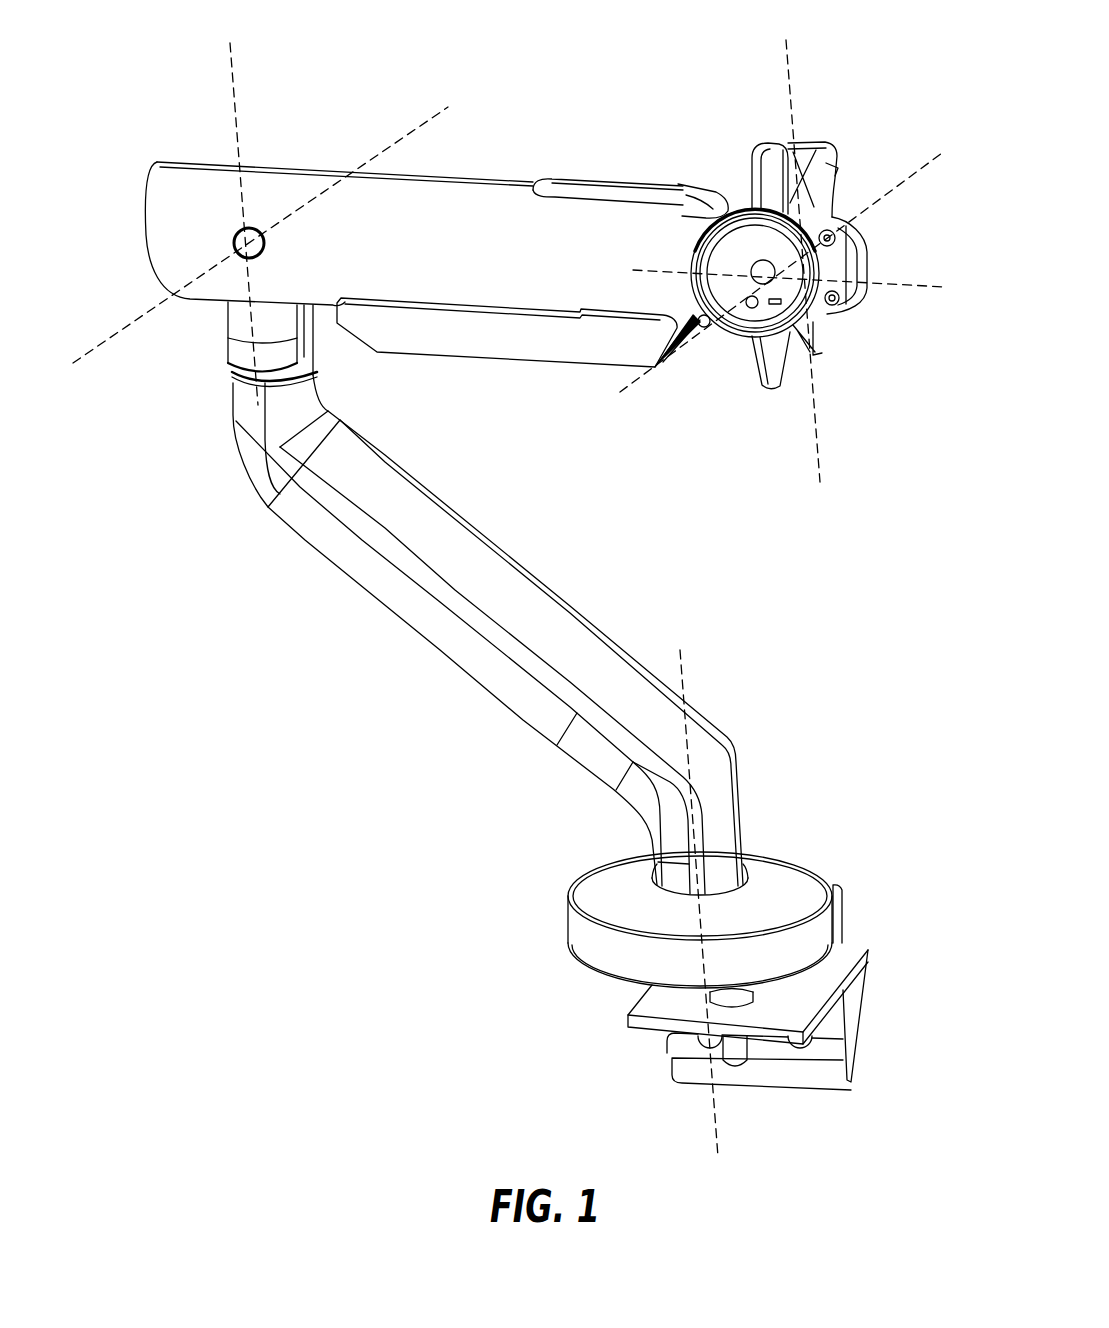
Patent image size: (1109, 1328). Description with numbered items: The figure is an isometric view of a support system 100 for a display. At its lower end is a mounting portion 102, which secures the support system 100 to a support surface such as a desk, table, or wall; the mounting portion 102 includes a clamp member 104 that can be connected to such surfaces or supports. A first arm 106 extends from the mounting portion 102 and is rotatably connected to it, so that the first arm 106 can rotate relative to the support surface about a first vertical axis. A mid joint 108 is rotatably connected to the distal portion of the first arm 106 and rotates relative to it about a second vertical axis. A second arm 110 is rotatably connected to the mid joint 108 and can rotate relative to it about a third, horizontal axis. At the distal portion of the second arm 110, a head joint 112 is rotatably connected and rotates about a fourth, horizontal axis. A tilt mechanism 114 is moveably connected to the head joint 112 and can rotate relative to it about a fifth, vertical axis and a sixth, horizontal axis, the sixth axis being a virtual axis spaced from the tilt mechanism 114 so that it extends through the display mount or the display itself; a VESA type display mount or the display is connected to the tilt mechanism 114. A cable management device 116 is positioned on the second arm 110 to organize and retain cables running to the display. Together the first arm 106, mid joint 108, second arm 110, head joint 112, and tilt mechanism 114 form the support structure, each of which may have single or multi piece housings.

The support system 100 is at (144, 96).
The mounting portion 102 is at (772, 971).
The clamp member 104 is at (858, 995).
The first arm 106 is at (744, 743).
The mid joint 108 is at (221, 341).
The second arm 110 is at (496, 171).
The head joint 112 is at (816, 244).
The tilt mechanism 114 is at (826, 134).
The cable management device 116 is at (517, 368).